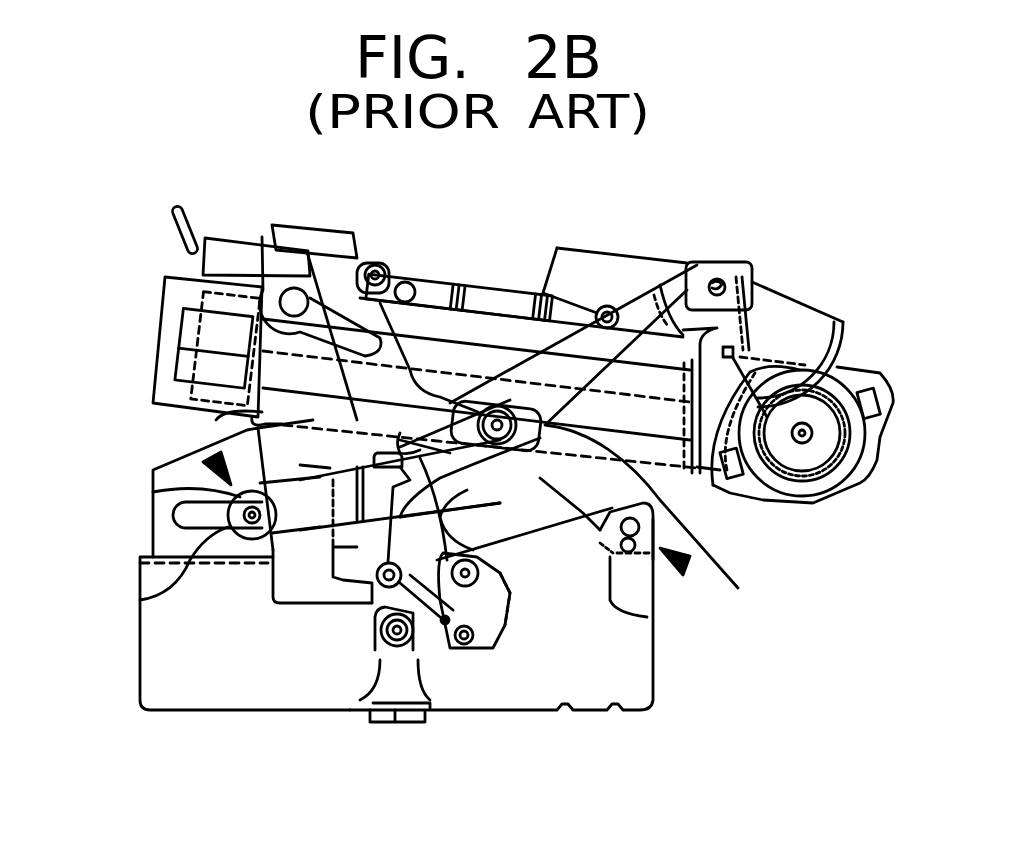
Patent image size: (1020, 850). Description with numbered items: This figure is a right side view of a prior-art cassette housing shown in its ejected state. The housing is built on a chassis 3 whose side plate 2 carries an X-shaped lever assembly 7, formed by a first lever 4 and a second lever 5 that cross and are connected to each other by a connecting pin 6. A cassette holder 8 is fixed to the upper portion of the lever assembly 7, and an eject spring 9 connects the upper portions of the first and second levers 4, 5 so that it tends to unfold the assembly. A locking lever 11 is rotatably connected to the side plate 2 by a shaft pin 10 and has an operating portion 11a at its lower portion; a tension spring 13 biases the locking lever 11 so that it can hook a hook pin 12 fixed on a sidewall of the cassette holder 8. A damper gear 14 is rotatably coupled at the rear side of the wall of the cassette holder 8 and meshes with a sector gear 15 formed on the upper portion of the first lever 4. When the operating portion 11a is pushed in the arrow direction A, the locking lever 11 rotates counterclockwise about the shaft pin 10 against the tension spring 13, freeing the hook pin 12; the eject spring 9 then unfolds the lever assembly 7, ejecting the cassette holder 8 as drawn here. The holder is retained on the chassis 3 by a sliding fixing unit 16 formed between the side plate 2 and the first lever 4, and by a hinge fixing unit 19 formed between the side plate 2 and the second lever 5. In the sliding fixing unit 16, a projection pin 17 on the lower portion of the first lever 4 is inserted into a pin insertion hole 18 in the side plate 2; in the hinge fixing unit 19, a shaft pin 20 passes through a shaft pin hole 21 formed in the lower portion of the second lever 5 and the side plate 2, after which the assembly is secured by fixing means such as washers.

The side plate 2 is at (230, 695).
The chassis 3 is at (138, 658).
The first lever 4 is at (153, 499).
The second lever 5 is at (285, 240).
The connecting pin 6 is at (647, 452).
The X-shaped lever assembly 7 is at (646, 335).
The cassette holder 8 is at (330, 228).
The eject spring 9 is at (497, 270).
The shaft pin 10 is at (380, 638).
The locking lever 11 is at (350, 573).
The operating portion 11a is at (415, 712).
The hook pin 12 is at (403, 282).
The tension spring 13 is at (420, 617).
The damper gear 14 is at (820, 465).
The sector gear 15 is at (810, 323).
The sliding fixing unit 16 is at (203, 462).
The projection pin 17 is at (140, 600).
The pin insertion hole 18 is at (172, 517).
The hinge fixing unit 19 is at (690, 565).
The shaft pin 20 is at (620, 610).
The shaft pin hole 21 is at (645, 568).
The arrow direction A is at (412, 725).